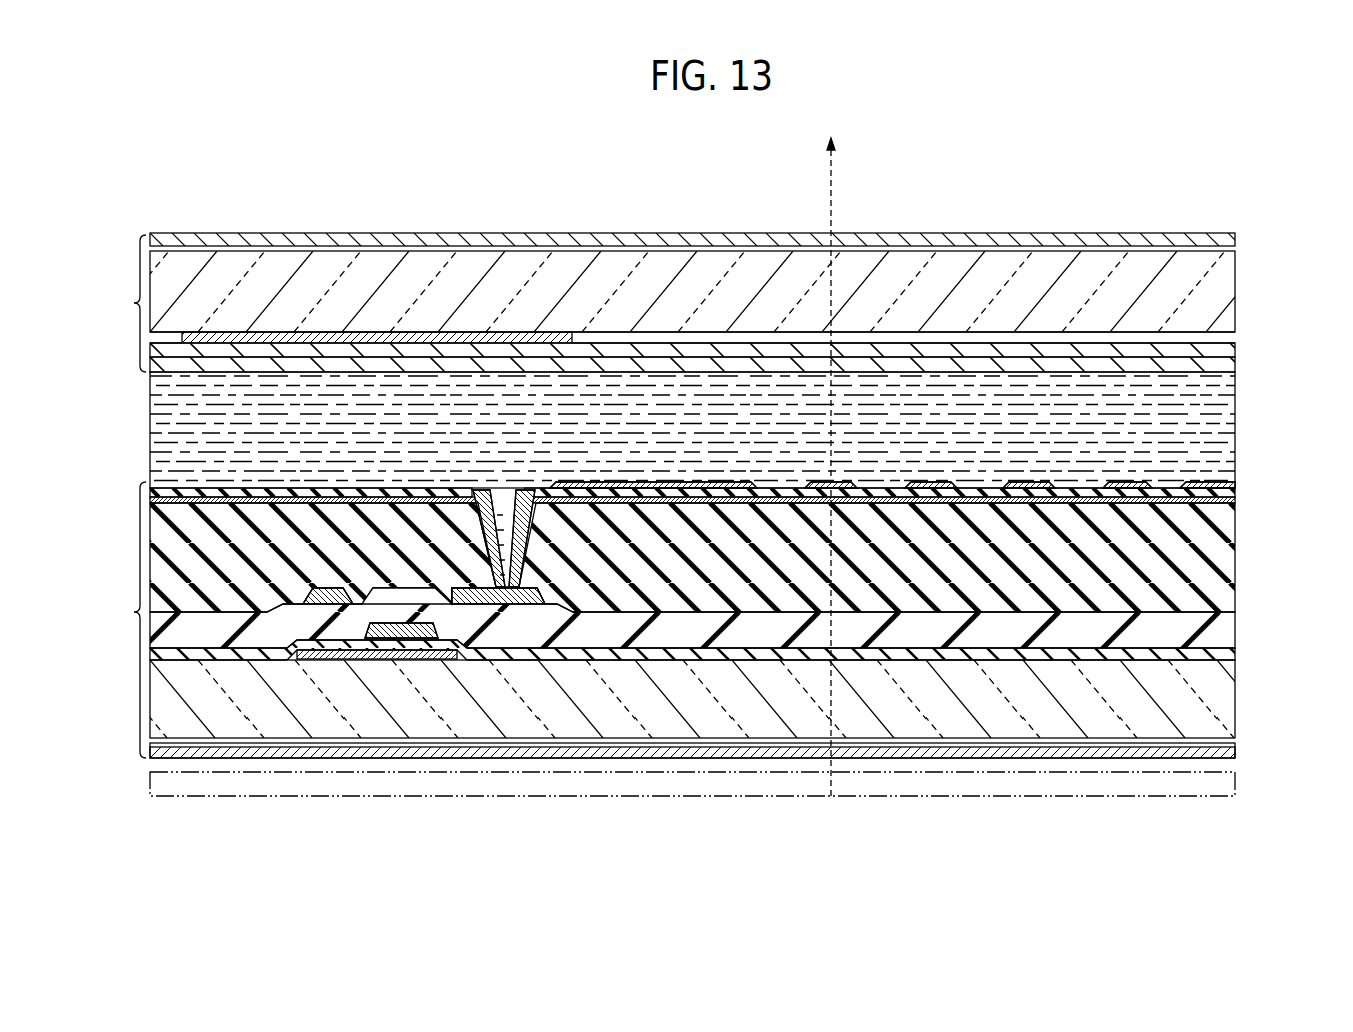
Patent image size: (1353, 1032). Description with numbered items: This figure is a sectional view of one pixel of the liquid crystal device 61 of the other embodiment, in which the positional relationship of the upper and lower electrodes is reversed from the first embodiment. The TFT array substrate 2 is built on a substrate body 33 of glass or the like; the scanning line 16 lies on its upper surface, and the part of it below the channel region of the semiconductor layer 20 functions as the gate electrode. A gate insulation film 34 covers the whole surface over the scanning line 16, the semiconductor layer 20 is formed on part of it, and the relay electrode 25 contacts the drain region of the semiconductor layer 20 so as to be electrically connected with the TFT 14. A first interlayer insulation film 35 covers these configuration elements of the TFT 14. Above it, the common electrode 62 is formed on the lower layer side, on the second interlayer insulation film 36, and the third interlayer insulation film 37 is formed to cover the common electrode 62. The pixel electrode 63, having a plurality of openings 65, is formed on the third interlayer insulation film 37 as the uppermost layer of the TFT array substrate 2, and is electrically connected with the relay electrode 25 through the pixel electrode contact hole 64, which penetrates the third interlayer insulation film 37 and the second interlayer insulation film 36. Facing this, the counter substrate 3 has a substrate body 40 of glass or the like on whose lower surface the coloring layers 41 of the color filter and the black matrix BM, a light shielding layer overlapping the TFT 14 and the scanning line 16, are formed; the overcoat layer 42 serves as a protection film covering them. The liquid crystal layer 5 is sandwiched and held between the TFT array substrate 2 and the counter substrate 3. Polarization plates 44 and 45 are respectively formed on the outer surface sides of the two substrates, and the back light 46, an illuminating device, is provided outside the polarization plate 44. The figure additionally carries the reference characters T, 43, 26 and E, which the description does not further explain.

The liquid crystal device 61 is at (782, 150).
The center line of transmissive region T is at (835, 165).
The counter substrate 3 is at (131, 303).
The TFT array substrate 2 is at (131, 620).
The polarization plate 45 is at (1237, 238).
The substrate body 40 is at (1237, 269).
The black matrix BM is at (258, 333).
The overcoat layer 42 is at (1237, 350).
The alignment film 43 is at (1237, 367).
The coloring layers 41 is at (610, 342).
The liquid crystal layer 5 is at (152, 400).
The pixel electrode 63 is at (815, 484).
The openings 65 is at (878, 468).
The electrode branch E is at (1087, 492).
The third interlayer insulation film 37 is at (1237, 491).
The common electrode 62 is at (1237, 501).
The second interlayer insulation film 36 is at (1237, 560).
The TFT 14 is at (371, 548).
The first interlayer insulation film 35 is at (1237, 628).
The relay electrode 25 is at (462, 590).
The drain electrode 26 is at (482, 606).
The pixel electrode contact hole 64 is at (510, 590).
The scanning line 16 is at (395, 638).
The gate insulation film 34 is at (1237, 654).
The semiconductor layer 20 is at (338, 659).
The substrate body 33 is at (1237, 700).
The polarization plate 44 is at (1237, 750).
The back light 46 is at (1237, 788).